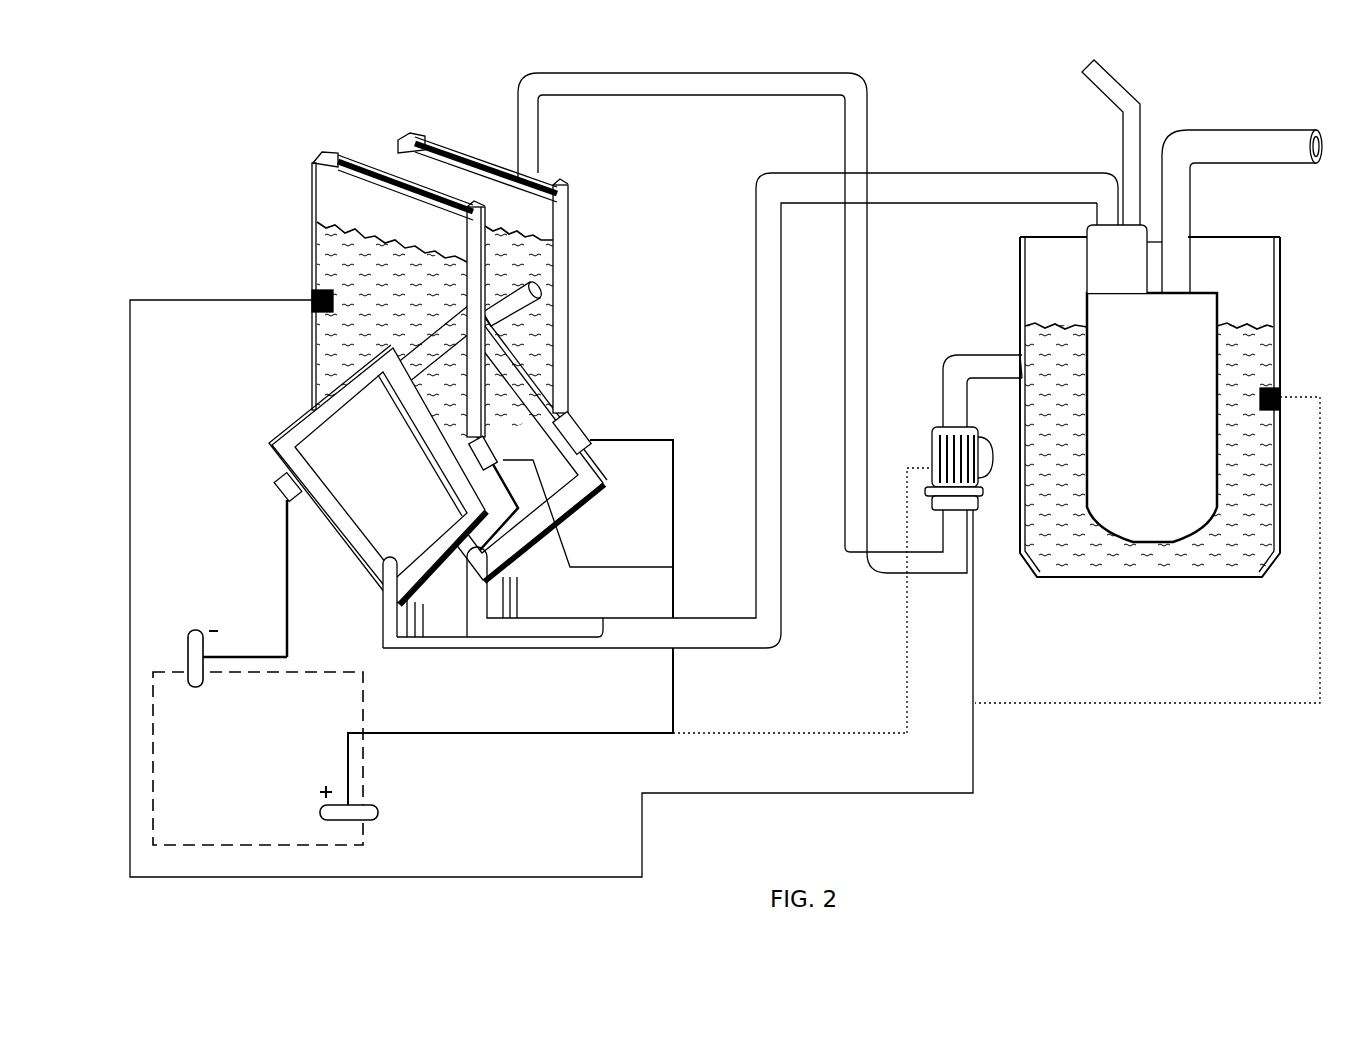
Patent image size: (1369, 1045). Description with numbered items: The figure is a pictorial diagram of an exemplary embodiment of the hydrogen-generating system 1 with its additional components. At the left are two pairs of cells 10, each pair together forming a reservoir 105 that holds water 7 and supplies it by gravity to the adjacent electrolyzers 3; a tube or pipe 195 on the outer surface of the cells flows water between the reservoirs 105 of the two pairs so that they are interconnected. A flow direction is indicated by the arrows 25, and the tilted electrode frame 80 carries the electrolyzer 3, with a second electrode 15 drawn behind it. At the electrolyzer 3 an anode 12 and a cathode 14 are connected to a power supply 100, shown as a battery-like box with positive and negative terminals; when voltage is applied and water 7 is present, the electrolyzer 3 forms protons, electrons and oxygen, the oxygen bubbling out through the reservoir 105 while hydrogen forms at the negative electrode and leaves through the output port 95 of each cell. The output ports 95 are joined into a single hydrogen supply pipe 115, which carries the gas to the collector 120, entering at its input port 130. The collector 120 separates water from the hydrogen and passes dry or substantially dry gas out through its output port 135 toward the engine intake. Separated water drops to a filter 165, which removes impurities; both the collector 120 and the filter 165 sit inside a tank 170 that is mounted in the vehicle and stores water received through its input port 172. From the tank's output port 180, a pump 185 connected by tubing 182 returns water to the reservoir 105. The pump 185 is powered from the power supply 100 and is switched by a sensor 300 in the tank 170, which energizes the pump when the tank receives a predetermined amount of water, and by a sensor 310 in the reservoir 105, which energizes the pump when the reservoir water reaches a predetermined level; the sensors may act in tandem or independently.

The system 1 is at (893, 63).
The electrolyzer 3 is at (363, 473).
The water 7 is at (328, 248).
The pair of cells 10 is at (430, 352).
The anode 12 is at (567, 430).
The cathode 14 is at (275, 480).
The second electrode 15 is at (500, 330).
The flow direction 25 is at (350, 328).
The electrode frame 80 is at (297, 437).
The output port 95 is at (393, 552).
The power supply 100 is at (367, 830).
The reservoir 105 is at (363, 166).
The hydrogen supply pipe 115 is at (650, 635).
The collector 120 is at (1107, 243).
The input port 130 is at (1106, 205).
The output port 135 is at (1112, 93).
The filter 165 is at (1180, 537).
The tank 170 is at (1117, 577).
The input port 172 is at (1270, 150).
The output port 180 is at (1014, 346).
The tubing 182 is at (950, 382).
The pump 185 is at (992, 477).
The tube or pipe 195 is at (540, 293).
The sensor 300 is at (1283, 387).
The sensor 310 is at (310, 297).